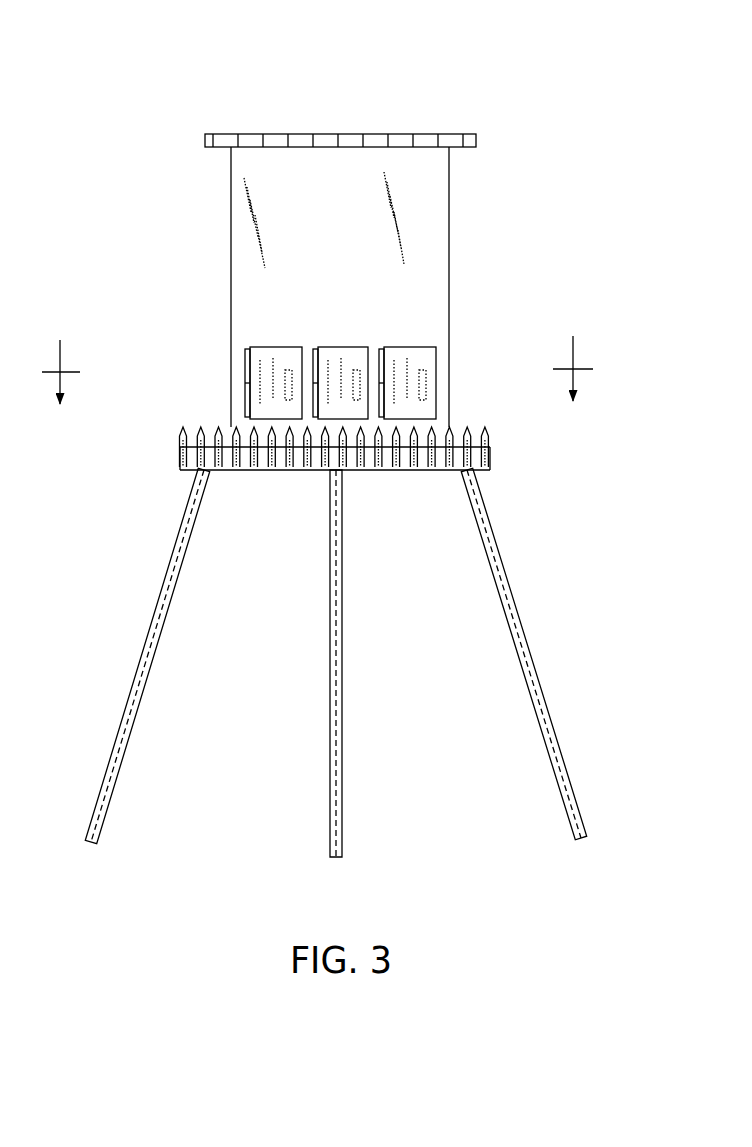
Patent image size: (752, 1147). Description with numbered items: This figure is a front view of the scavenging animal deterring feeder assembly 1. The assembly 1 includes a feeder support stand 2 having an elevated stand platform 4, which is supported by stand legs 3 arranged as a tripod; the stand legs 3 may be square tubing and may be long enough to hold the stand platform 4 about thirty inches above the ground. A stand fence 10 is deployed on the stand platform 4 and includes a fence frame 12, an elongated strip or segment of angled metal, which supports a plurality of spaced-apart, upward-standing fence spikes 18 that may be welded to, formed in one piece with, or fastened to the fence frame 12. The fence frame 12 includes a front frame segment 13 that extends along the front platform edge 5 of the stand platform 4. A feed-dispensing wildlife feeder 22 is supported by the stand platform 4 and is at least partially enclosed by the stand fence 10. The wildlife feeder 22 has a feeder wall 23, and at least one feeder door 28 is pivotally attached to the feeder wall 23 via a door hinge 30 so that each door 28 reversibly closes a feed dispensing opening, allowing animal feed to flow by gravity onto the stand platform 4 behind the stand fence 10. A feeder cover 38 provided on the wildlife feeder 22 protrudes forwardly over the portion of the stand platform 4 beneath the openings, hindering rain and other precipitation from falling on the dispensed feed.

The assembly 1 is at (548, 50).
The feeder support stand 2 is at (148, 574).
The stand leg 3 is at (530, 695).
The stand platform 4 is at (166, 467).
The front platform edge 5 is at (317, 357).
The stand fence 10 is at (203, 421).
The fence frame 12 is at (285, 483).
The front frame segment 13 is at (401, 471).
The fence spike 18 is at (485, 427).
The feed-dispensing wildlife feeder 22 is at (226, 271).
The feeder wall 23 is at (417, 253).
The feeder door 28 is at (406, 347).
The door hinge 30 is at (246, 347).
The feeder cover 38 is at (478, 140).